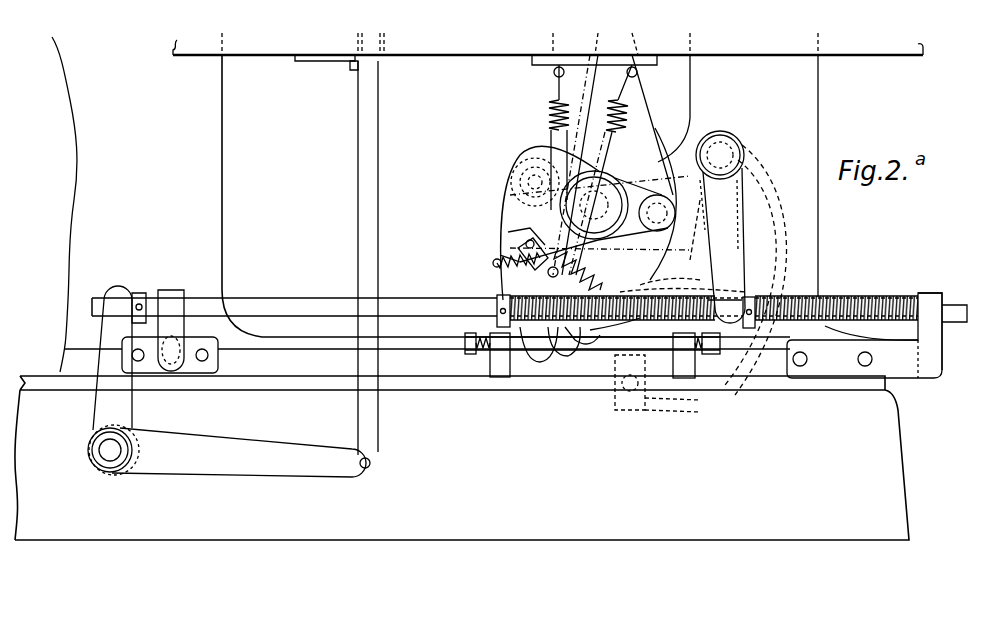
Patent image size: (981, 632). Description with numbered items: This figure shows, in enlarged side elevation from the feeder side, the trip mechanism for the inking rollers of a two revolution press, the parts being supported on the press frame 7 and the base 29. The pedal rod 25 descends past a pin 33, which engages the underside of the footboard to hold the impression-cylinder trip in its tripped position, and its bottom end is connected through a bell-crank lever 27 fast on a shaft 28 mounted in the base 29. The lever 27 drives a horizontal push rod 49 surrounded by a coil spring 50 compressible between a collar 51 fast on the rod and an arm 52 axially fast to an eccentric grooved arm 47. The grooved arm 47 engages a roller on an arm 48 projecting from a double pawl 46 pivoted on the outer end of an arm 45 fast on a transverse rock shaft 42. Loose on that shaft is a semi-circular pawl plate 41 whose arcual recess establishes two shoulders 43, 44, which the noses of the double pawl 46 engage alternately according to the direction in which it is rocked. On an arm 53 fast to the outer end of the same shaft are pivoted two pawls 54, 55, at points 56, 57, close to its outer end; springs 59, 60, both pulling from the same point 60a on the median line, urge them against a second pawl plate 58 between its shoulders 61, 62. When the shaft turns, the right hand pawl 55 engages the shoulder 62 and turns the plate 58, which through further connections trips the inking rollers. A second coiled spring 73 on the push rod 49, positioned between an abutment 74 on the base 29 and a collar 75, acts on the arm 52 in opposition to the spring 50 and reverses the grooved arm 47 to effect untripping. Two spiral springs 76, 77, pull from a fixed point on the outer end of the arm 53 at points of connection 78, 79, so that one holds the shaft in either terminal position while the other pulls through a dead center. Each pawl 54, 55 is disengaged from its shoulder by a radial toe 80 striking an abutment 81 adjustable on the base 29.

The frame plate 7 is at (222, 128).
The rod 25 is at (376, 168).
The bell-crank lever 27 is at (132, 429).
The shaft 28 is at (115, 455).
The base 29 is at (494, 538).
The pin 33 is at (351, 66).
The semi-circular pawl plate 41 is at (708, 155).
The transverse rock shaft 42 is at (676, 220).
The shoulder 43 is at (518, 252).
The shoulder 44 is at (742, 300).
The arm 45 is at (693, 230).
The double pawl 46 is at (712, 296).
The eccentric grooved arm 47 is at (783, 180).
The arm 48 is at (615, 380).
The horizontal push rod 49 is at (420, 300).
The coil spring 50 is at (520, 352).
The collar 51 is at (483, 357).
The arm 52 is at (712, 262).
The arm 53 is at (600, 255).
The pawl 54 is at (493, 264).
The pawl 55 is at (615, 329).
The pivot 56 is at (497, 305).
The pivot 57 is at (568, 342).
The second pawl plate 58 is at (556, 165).
The spring 59 is at (500, 258).
The spring 60 is at (676, 276).
The point 60a is at (520, 234).
The shoulder 61 is at (527, 243).
The shoulder 62 is at (640, 280).
The coiled spring 73 is at (850, 335).
The abutment 74 is at (935, 345).
The collar 75 is at (751, 328).
The spiral spring 76 is at (549, 108).
The spiral spring 77 is at (628, 108).
The point of connection 78 is at (500, 268).
The point of connection 79 is at (566, 356).
The radial toe 80 is at (546, 362).
The abutment 81 is at (505, 377).